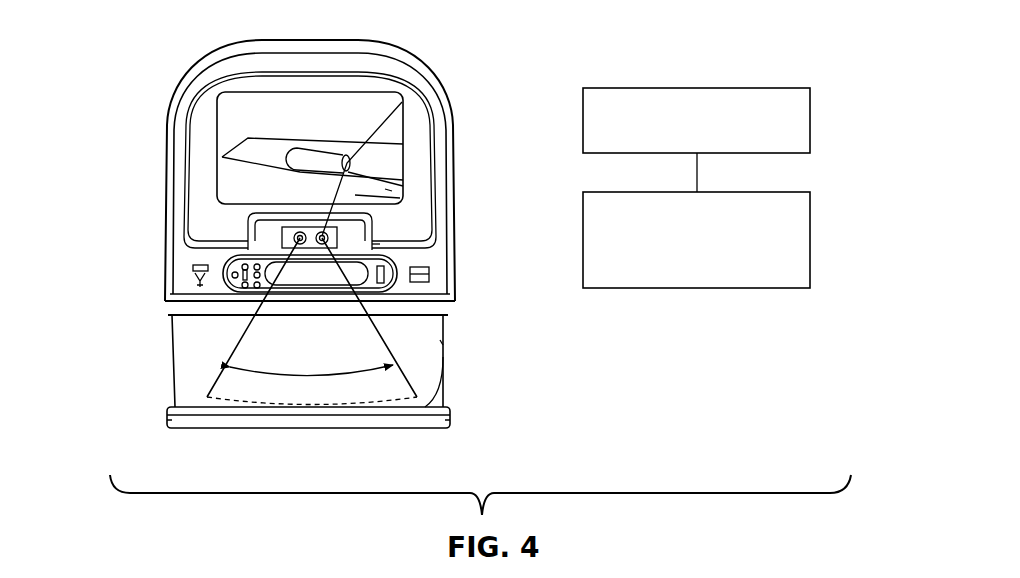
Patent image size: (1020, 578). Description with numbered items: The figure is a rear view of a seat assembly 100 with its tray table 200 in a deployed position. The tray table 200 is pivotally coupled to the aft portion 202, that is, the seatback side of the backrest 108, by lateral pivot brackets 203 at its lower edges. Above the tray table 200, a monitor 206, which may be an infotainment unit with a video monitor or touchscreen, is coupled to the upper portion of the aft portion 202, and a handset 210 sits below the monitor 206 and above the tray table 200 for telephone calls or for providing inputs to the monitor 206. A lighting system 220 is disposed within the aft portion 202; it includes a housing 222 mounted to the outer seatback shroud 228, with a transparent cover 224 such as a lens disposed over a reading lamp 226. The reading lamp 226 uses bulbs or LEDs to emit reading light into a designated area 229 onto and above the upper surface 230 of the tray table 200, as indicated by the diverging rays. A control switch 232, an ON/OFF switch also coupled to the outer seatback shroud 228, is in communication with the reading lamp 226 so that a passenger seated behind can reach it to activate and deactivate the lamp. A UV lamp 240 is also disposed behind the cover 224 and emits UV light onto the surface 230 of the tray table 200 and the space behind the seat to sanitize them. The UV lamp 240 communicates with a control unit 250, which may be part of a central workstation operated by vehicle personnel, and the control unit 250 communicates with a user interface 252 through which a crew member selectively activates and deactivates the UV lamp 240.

The seat assembly 100 is at (112, 38).
The backrest 108 is at (453, 145).
The tray table 200 is at (447, 410).
The aft portion 202 is at (441, 340).
The lateral pivot brackets 203 is at (172, 423).
The monitor 206 is at (208, 128).
The handset 210 is at (404, 266).
The lighting system 220 is at (443, 170).
The housing 222 is at (262, 234).
The transparent cover 224 is at (376, 244).
The reading lamp 226 is at (285, 255).
The outer seatback shroud 228 is at (410, 75).
The designated area 229 is at (221, 366).
The upper surface 230 is at (443, 358).
The control switch 232 is at (190, 261).
The UV lamp 240 is at (402, 102).
The control unit 250 is at (812, 122).
The user interface 252 is at (812, 240).